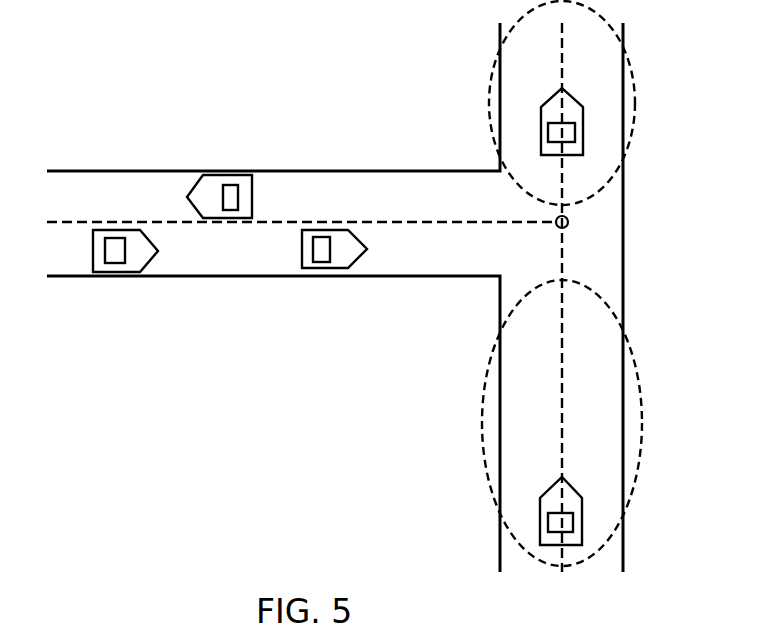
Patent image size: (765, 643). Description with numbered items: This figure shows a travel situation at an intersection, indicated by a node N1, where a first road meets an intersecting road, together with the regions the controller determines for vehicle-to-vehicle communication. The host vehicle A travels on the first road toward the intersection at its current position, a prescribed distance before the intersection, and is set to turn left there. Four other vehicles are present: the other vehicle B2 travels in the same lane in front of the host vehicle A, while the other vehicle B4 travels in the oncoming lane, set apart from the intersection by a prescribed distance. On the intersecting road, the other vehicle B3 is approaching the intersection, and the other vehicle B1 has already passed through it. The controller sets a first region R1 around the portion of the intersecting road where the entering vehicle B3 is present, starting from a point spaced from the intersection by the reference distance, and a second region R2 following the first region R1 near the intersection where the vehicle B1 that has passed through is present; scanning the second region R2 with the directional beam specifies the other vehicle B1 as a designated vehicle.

The node N1 is at (554, 227).
The first region R1 is at (638, 434).
The second region R2 is at (635, 96).
The host vehicle A is at (120, 272).
The other vehicle B1 is at (541, 121).
The other vehicle B2 is at (327, 276).
The other vehicle B3 is at (540, 517).
The other vehicle B4 is at (219, 172).